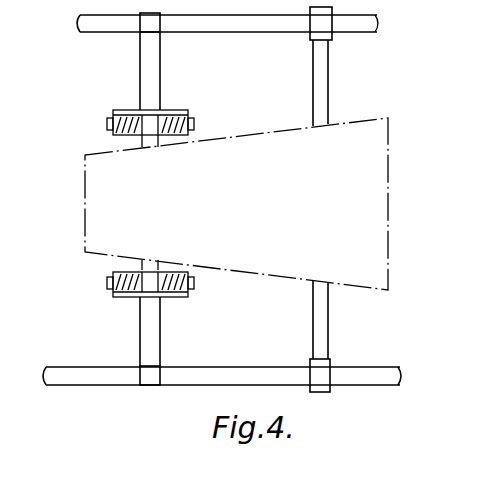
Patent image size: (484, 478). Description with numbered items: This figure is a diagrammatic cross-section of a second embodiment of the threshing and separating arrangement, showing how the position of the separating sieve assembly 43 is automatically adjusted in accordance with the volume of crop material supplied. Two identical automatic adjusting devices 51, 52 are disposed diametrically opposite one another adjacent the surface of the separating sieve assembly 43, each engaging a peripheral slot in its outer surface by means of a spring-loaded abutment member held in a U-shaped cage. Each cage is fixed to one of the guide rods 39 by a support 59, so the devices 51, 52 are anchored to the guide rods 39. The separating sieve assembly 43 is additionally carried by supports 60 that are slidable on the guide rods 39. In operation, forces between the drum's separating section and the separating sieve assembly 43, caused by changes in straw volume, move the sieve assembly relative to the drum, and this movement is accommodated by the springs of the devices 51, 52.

The guide rods 39 is at (286, 27).
The separating sieve assembly 43 is at (393, 142).
The automatic adjusting device 51 is at (98, 113).
The automatic adjusting device 52 is at (99, 297).
The support 59 is at (152, 66).
The supports 60 is at (313, 94).